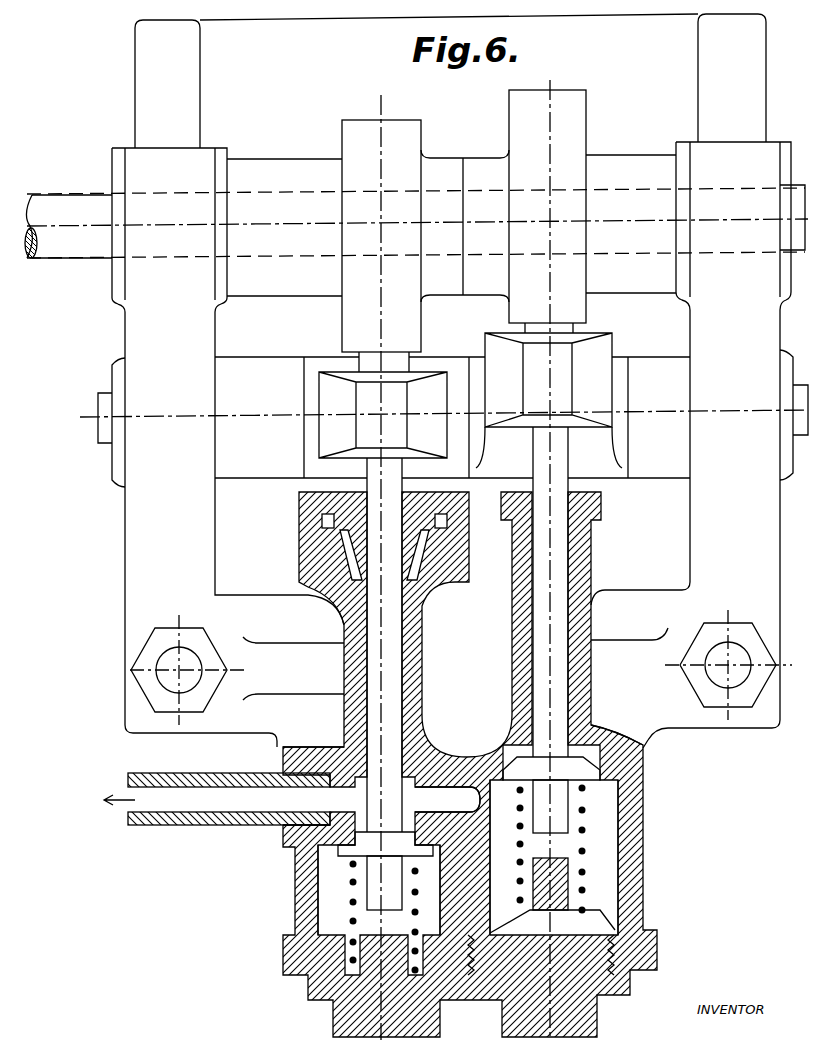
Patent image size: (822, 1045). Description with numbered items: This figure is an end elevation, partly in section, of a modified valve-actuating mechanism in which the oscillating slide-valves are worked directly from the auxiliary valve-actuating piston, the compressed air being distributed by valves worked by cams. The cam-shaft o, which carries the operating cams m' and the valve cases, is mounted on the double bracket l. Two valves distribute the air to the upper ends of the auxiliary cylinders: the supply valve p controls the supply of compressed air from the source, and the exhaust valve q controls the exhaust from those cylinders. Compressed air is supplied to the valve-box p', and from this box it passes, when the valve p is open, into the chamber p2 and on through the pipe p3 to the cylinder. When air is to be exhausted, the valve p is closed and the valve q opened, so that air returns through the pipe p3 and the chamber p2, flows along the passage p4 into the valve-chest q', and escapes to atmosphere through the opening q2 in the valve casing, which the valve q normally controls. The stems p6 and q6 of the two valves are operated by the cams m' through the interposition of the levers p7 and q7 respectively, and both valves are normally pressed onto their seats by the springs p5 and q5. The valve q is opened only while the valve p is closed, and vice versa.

The double bracket l is at (136, 72).
The cam-shaft o is at (76, 208).
The cams m' is at (467, 560).
The lever p7 is at (372, 400).
The lever q7 is at (560, 375).
The valve stem p6 is at (375, 485).
The valve stem q6 is at (560, 479).
The passage p4 is at (440, 795).
The opening q2 is at (598, 738).
The exhaust valve q is at (593, 795).
The spring q5 is at (583, 852).
The valve-chest q' is at (594, 857).
The pipe p3 is at (192, 802).
The chamber p2 is at (358, 813).
The supply valve p is at (333, 871).
The valve-box p' is at (332, 897).
The spring p5 is at (350, 921).